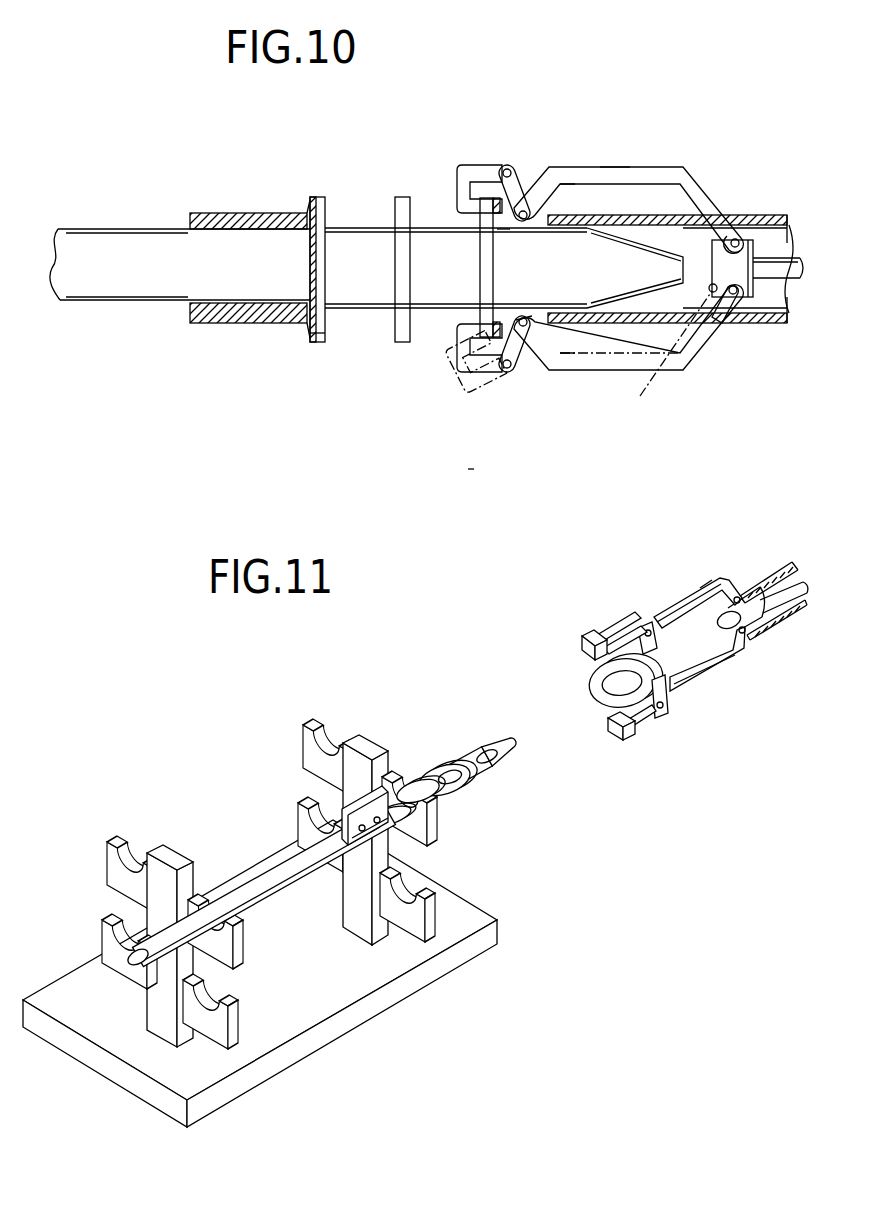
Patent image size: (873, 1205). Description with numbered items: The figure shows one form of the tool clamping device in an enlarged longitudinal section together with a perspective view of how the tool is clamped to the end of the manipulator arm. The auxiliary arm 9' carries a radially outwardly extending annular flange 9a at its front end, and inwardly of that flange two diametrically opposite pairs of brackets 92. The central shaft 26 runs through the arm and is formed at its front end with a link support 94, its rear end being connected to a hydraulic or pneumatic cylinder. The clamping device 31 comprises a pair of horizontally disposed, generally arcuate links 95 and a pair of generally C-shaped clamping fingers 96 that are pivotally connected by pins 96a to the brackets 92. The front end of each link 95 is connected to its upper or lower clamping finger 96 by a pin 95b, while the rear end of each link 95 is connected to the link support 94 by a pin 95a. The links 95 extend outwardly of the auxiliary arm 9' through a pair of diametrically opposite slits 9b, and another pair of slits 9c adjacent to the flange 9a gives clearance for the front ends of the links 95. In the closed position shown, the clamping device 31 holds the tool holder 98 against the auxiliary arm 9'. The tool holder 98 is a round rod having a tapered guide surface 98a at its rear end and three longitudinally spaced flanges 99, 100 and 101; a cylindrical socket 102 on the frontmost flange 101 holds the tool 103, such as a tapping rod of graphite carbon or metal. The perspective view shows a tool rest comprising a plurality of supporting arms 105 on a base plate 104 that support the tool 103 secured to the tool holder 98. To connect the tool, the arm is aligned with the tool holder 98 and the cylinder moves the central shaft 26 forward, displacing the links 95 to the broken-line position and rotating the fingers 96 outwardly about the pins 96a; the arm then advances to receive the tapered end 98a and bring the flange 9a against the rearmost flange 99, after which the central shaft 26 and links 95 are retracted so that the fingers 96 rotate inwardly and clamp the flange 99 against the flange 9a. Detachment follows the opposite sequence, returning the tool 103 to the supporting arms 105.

In FIG. 10, the tool 103 is at (130, 292).
In FIG. 11, the tool 103 is at (255, 890).
In FIG. 10, the cylindrical socket 102 is at (237, 323).
In FIG. 11, the cylindrical socket 102 is at (343, 880).
In FIG. 10, the frontmost flange 101 is at (318, 344).
In FIG. 11, the frontmost flange 101 is at (370, 805).
In FIG. 10, the flange 100 is at (400, 344).
In FIG. 11, the flange 100 is at (415, 775).
In FIG. 10, the rearmost flange 99 is at (482, 278).
In FIG. 11, the rearmost flange 99 is at (447, 760).
In FIG. 10, the tool holder 98 is at (436, 228).
In FIG. 11, the tool holder 98 is at (463, 758).
In FIG. 11, the tapered guide surface 98a is at (505, 752).
In FIG. 10, the clamping finger 96 is at (470, 165).
In FIG. 11, the clamping finger 96 is at (597, 636).
In FIG. 10, the pin 96a is at (509, 169).
In FIG. 10, the bracket 92 is at (527, 210).
In FIG. 11, the bracket 92 is at (640, 626).
In FIG. 10, the clamping device 31 is at (615, 165).
In FIG. 11, the clamping device 31 is at (673, 600).
In FIG. 10, the link 95 is at (666, 166).
In FIG. 11, the link 95 is at (700, 600).
In FIG. 10, the pin 95a is at (737, 238).
In FIG. 10, the pin 95b is at (543, 327).
In FIG. 10, the auxiliary arm 9' is at (671, 236).
In FIG. 11, the auxiliary arm 9' is at (773, 575).
In FIG. 10, the annular flange 9a is at (498, 230).
In FIG. 10, the slit 9b is at (728, 321).
In FIG. 10, the slit 9c is at (546, 213).
In FIG. 10, the link support 94 is at (750, 300).
In FIG. 11, the link support 94 is at (770, 634).
In FIG. 10, the central shaft 26 is at (770, 282).
In FIG. 11, the central shaft 26 is at (782, 622).
In FIG. 11, the supporting arm 105 is at (310, 748).
In FIG. 11, the base plate 104 is at (372, 1008).